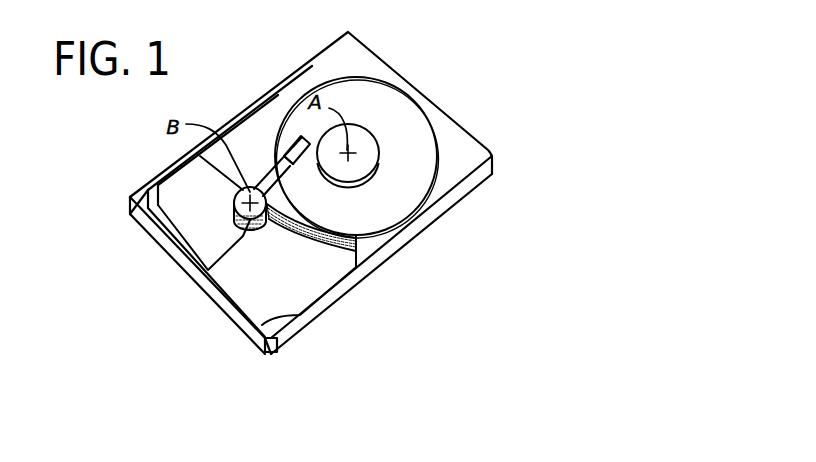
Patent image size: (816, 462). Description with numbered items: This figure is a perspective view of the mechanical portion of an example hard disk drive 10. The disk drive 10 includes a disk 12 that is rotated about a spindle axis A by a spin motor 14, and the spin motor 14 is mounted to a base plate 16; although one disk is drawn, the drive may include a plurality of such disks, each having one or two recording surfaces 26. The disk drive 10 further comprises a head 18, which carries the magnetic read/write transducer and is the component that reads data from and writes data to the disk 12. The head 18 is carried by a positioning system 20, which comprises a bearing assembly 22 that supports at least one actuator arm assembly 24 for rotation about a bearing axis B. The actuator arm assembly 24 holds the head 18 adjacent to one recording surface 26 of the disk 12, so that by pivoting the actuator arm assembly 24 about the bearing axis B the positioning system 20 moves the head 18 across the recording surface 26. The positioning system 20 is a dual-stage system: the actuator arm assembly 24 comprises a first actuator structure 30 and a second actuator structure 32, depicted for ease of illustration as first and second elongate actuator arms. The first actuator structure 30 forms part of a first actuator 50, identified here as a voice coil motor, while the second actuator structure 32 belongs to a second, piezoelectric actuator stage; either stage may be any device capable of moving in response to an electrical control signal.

The disk drive 10 is at (116, 213).
The disk 12 is at (361, 100).
The spin motor 14 is at (360, 140).
The base plate 16 is at (252, 288).
The head 18 is at (302, 137).
The positioning system 20 is at (284, 244).
The bearing assembly 22 is at (258, 230).
The actuator arm assembly 24 is at (305, 174).
The recording surface 26 is at (408, 193).
The first actuator structure 30 is at (295, 170).
The second actuator structure 32 is at (281, 173).
The first actuator 50 is at (188, 220).